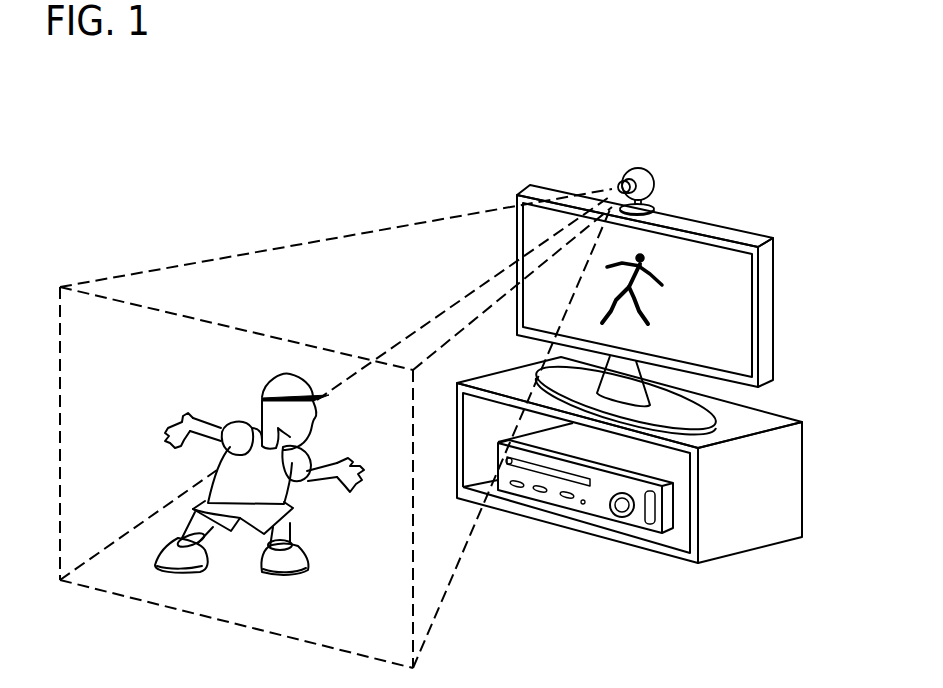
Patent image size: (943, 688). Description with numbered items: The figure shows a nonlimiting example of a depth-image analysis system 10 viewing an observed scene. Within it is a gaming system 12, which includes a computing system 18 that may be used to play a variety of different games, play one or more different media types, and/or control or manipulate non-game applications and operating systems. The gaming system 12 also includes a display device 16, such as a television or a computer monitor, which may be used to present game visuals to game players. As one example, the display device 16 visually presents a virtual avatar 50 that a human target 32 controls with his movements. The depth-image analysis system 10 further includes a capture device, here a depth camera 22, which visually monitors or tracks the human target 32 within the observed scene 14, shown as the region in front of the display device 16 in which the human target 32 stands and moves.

The depth-image analysis system 10 is at (398, 75).
The gaming system 12 is at (456, 147).
The observed scene 14 is at (114, 350).
The display device 16 is at (732, 228).
The computing system 18 is at (600, 512).
The depth camera 22 is at (652, 174).
The human target 32 is at (266, 488).
The virtual avatar 50 is at (645, 257).